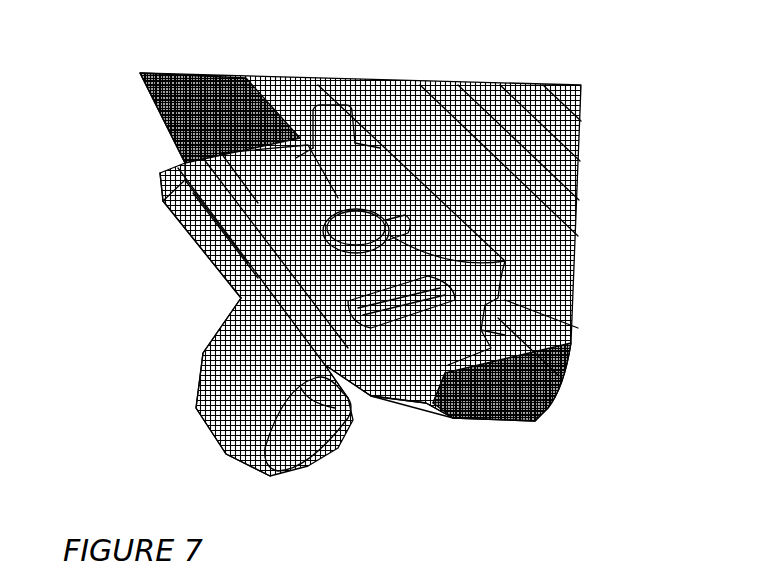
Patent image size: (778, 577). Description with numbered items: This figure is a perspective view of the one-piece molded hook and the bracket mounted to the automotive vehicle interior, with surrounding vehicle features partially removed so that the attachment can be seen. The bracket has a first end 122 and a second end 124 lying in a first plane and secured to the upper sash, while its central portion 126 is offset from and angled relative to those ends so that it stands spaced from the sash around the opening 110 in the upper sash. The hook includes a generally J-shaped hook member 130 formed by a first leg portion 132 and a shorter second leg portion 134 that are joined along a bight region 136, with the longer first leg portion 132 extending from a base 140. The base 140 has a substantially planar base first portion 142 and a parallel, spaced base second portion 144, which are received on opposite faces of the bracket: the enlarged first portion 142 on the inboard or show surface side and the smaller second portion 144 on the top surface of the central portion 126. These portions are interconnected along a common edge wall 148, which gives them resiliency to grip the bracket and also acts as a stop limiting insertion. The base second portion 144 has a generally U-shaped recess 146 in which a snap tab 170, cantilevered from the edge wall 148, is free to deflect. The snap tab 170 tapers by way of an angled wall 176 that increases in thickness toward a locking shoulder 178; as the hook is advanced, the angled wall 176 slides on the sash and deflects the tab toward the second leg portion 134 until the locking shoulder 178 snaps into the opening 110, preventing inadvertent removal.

The opening 110 is at (520, 293).
The first end of the bracket 122 is at (157, 178).
The second end of the bracket 124 is at (437, 400).
The central portion of the bracket 126 is at (218, 268).
The hook member 130 is at (153, 425).
The first leg portion 132 is at (200, 353).
The second leg portion 134 is at (347, 407).
The bight region 136 is at (303, 453).
The base 140 is at (157, 193).
The base first portion 142 is at (223, 225).
The base second portion 144 is at (173, 157).
The recess 146 is at (497, 253).
The edge wall 148 is at (563, 353).
The snap tab 170 is at (412, 190).
The angled wall 176 is at (347, 212).
The locking shoulder 178 is at (395, 205).